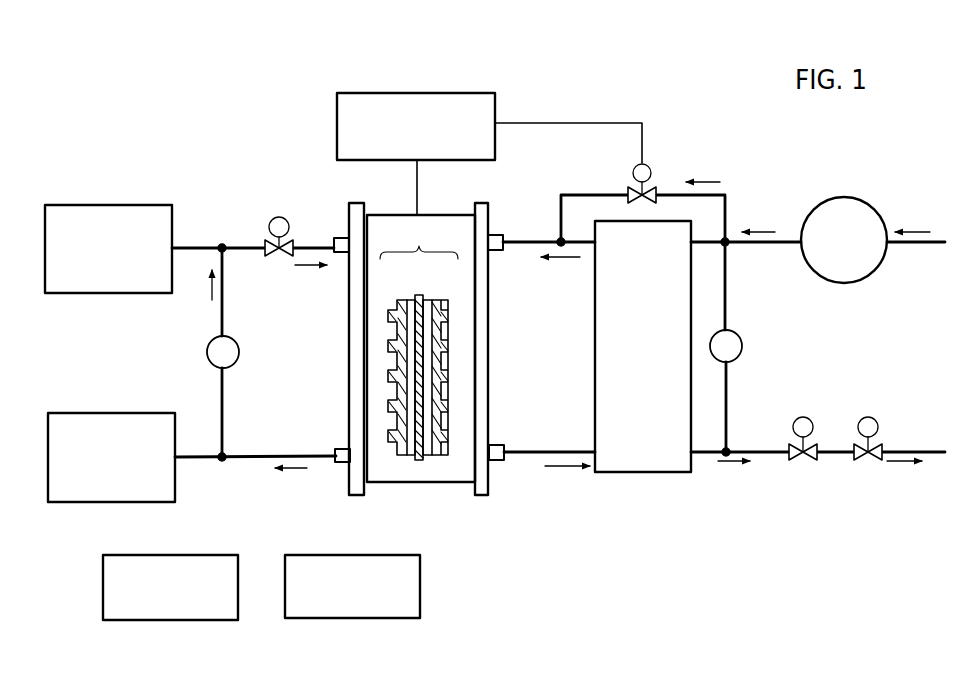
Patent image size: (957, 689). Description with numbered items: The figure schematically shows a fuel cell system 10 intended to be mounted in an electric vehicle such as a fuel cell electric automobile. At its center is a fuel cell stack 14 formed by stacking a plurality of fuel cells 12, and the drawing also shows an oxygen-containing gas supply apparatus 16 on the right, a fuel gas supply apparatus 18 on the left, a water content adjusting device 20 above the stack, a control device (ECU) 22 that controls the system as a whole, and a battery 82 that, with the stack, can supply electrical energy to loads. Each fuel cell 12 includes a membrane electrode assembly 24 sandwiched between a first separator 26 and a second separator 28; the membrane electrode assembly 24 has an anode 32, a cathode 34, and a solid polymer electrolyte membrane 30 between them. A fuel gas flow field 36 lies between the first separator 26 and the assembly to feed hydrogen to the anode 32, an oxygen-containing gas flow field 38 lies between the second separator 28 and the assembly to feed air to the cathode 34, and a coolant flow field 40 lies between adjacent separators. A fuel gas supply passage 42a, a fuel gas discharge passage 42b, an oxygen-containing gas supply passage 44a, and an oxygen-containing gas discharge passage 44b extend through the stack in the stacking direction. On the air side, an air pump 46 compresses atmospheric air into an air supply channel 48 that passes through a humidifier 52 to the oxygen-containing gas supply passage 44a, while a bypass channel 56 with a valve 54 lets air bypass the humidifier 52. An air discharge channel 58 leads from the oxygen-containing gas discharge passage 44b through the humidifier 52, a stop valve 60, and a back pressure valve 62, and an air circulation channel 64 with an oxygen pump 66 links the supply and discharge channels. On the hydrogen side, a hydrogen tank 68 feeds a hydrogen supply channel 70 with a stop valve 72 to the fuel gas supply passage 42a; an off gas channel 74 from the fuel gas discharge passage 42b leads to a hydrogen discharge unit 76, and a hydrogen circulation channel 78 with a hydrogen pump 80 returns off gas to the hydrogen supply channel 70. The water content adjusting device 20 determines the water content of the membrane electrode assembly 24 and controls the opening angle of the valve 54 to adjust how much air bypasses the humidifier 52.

The fuel cell system 10 is at (882, 120).
The fuel cell 12 is at (444, 222).
The fuel cell stack 14 is at (405, 212).
The oxygen-containing gas supply apparatus 16 is at (899, 198).
The fuel gas supply apparatus 18 is at (243, 190).
The water content adjusting device 20 is at (336, 103).
The control device (ECU) 22 is at (124, 555).
The membrane electrode assembly 24 is at (419, 344).
The first separator 26 is at (382, 318).
The second separator 28 is at (452, 312).
The solid polymer electrolyte membrane 30 is at (418, 295).
The anode 32 is at (409, 299).
The cathode 34 is at (430, 299).
The fuel gas flow field 36 is at (410, 343).
The oxygen-containing gas flow field 38 is at (440, 350).
The coolant flow field 40 is at (392, 392).
The fuel gas supply passage 42a is at (337, 238).
The fuel gas discharge passage 42b is at (342, 463).
The oxygen-containing gas supply passage 44a is at (500, 236).
The oxygen-containing gas discharge passage 44b is at (498, 461).
The air pump 46 is at (853, 199).
The air supply channel 48 is at (768, 245).
The humidifier 52 is at (660, 472).
The valve 54 is at (650, 167).
The bypass channel 56 is at (728, 207).
The air discharge channel 58 is at (541, 452).
The stop valve 60 is at (808, 459).
The back pressure valve 62 is at (872, 459).
The air circulation channel 64 is at (728, 378).
The oxygen pump 66 is at (741, 338).
The hydrogen tank 68 is at (62, 205).
The hydrogen supply channel 70 is at (194, 246).
The stop valve 72 is at (280, 217).
The off gas channel 74 is at (250, 470).
The hydrogen discharge unit 76 is at (64, 413).
The hydrogen circulation channel 78 is at (220, 383).
The hydrogen pump 80 is at (211, 341).
The battery 82 is at (306, 555).